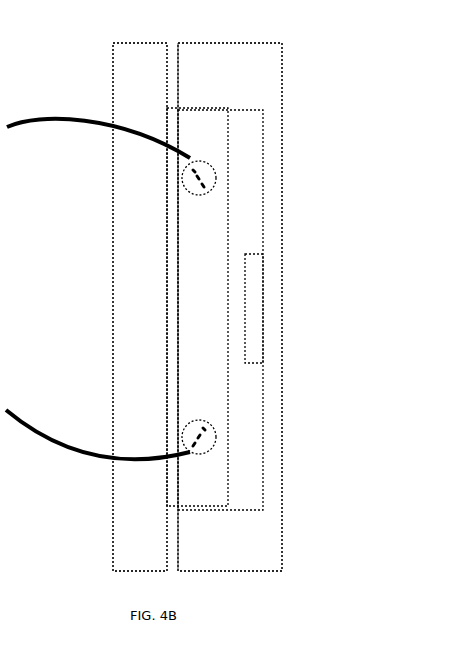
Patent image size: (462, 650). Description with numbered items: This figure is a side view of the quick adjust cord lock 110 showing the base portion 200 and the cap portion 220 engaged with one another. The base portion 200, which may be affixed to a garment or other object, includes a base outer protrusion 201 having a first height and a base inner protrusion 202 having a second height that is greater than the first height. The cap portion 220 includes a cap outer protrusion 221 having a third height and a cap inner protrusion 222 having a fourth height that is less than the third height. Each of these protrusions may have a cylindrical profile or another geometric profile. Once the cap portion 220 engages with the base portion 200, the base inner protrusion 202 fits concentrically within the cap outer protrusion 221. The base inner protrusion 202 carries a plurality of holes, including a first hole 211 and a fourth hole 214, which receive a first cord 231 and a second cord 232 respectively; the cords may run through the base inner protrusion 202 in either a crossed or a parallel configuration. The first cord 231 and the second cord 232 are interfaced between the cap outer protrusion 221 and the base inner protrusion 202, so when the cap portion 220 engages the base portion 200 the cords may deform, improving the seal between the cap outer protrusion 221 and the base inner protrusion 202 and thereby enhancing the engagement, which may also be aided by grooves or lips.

The quick adjust cord lock 110 is at (345, 47).
The base portion 200 is at (106, 249).
The base outer protrusion 201 is at (155, 42).
The base inner protrusion 202 is at (223, 118).
The first hole 211 is at (216, 191).
The fourth hole 214 is at (219, 437).
The cap portion 220 is at (300, 83).
The cap outer protrusion 221 is at (180, 551).
The cap inner protrusion 222 is at (248, 304).
The first cord 231 is at (42, 120).
The second cord 232 is at (78, 459).